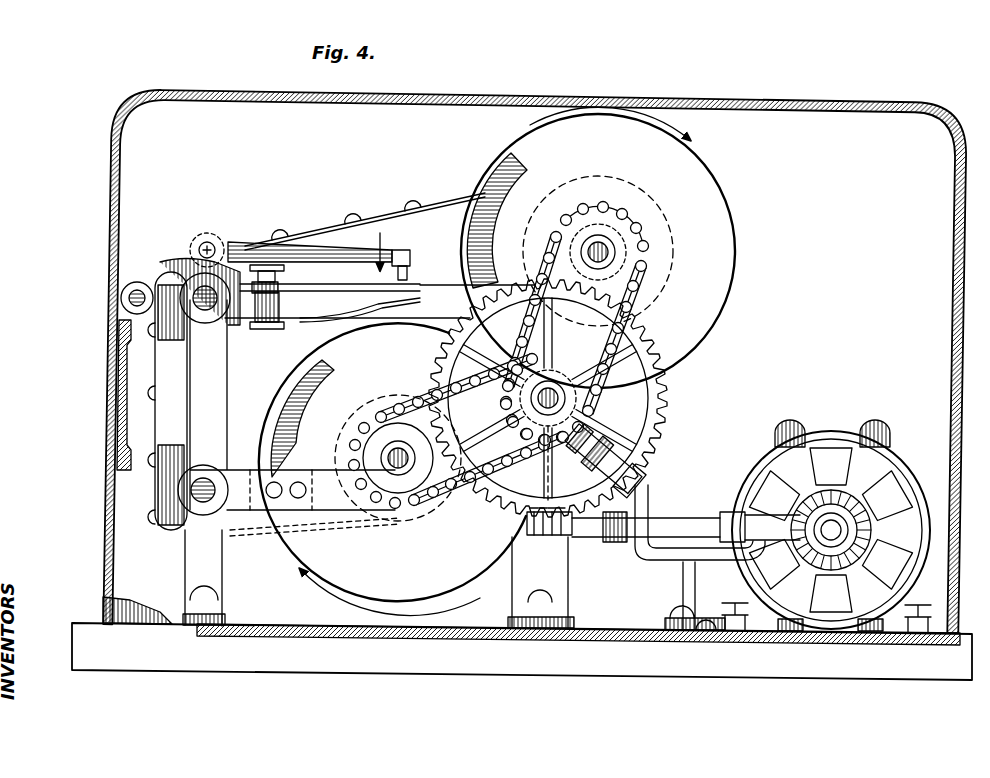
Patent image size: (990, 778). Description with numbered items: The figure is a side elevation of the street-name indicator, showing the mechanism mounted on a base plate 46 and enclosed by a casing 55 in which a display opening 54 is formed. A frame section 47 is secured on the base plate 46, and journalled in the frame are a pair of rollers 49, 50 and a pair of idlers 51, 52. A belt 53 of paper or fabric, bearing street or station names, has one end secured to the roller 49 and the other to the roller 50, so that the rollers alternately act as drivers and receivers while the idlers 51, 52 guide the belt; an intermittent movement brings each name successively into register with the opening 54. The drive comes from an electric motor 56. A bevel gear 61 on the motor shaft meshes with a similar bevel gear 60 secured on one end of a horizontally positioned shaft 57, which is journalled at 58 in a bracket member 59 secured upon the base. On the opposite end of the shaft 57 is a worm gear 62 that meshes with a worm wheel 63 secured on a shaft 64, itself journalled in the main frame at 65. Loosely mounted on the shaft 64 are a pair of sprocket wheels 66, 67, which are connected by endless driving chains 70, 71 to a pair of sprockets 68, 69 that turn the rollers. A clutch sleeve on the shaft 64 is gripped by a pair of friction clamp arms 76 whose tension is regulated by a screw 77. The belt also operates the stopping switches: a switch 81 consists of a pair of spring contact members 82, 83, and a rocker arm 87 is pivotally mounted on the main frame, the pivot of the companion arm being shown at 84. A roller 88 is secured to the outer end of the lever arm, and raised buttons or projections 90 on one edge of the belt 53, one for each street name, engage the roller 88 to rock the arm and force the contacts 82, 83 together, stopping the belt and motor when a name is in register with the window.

The base plate 46 is at (400, 663).
The frame section 47 is at (222, 408).
The roller 49 is at (726, 262).
The roller 50 is at (446, 567).
The idler 51 is at (192, 330).
The idler 52 is at (192, 470).
The belt 53 is at (312, 228).
The opening 54 is at (116, 380).
The casing 55 is at (108, 235).
The electric motor 56 is at (831, 440).
The shaft 57 is at (680, 521).
The journal 58 is at (616, 548).
The bracket member 59 is at (688, 578).
The bevel gear 60 is at (812, 548).
The bevel gear 61 is at (850, 546).
The worm gear 62 is at (558, 536).
The worm wheel 63 is at (522, 512).
The shaft 64 is at (585, 404).
The journal 65 is at (554, 463).
The sprocket wheel 66 is at (515, 406).
The sprocket wheel 67 is at (548, 360).
The sprocket 68 is at (616, 250).
The sprocket 69 is at (403, 492).
The endless driving chain 70 is at (606, 328).
The endless driving chain 71 is at (398, 410).
The friction clamp arms 76 is at (646, 472).
The screw 77 is at (604, 458).
The switch 81 is at (286, 322).
The spring contact member 82 is at (322, 291).
The spring contact member 83 is at (345, 318).
The pivot 84 is at (209, 243).
The rocker arm 87 is at (252, 242).
The roller 88 is at (121, 300).
The projections 90 is at (160, 468).